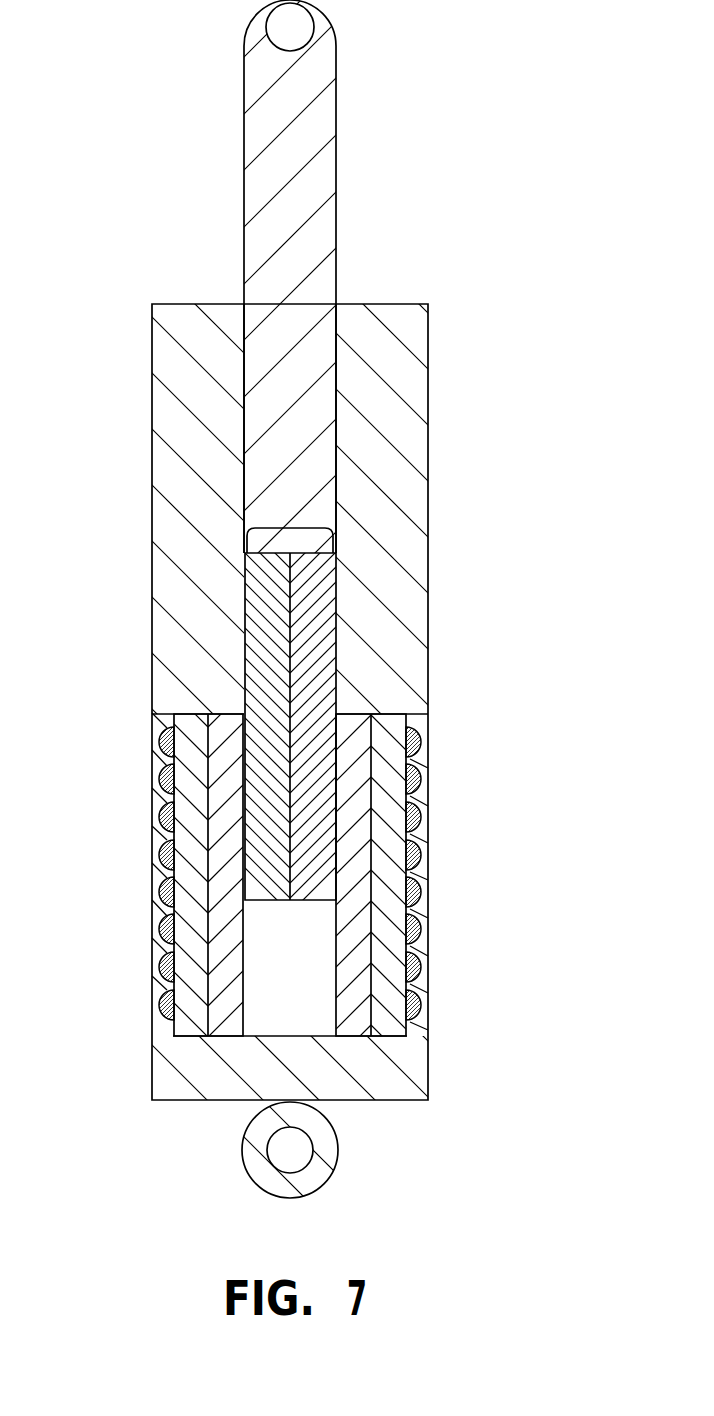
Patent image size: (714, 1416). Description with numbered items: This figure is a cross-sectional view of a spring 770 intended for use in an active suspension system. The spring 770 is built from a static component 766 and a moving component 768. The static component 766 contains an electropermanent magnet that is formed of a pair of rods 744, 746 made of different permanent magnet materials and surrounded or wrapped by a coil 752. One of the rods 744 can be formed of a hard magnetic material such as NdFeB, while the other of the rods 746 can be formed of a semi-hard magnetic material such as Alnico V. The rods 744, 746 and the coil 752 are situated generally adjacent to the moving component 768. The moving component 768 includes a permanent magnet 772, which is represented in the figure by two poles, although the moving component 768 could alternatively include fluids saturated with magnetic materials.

The static component 766 is at (411, 304).
The moving component 768 is at (337, 91).
The spring 770 is at (530, 113).
The permanent magnet 772 is at (289, 528).
The rod 744 is at (185, 714).
The coil 752 is at (428, 782).
The rod 746 is at (230, 1036).